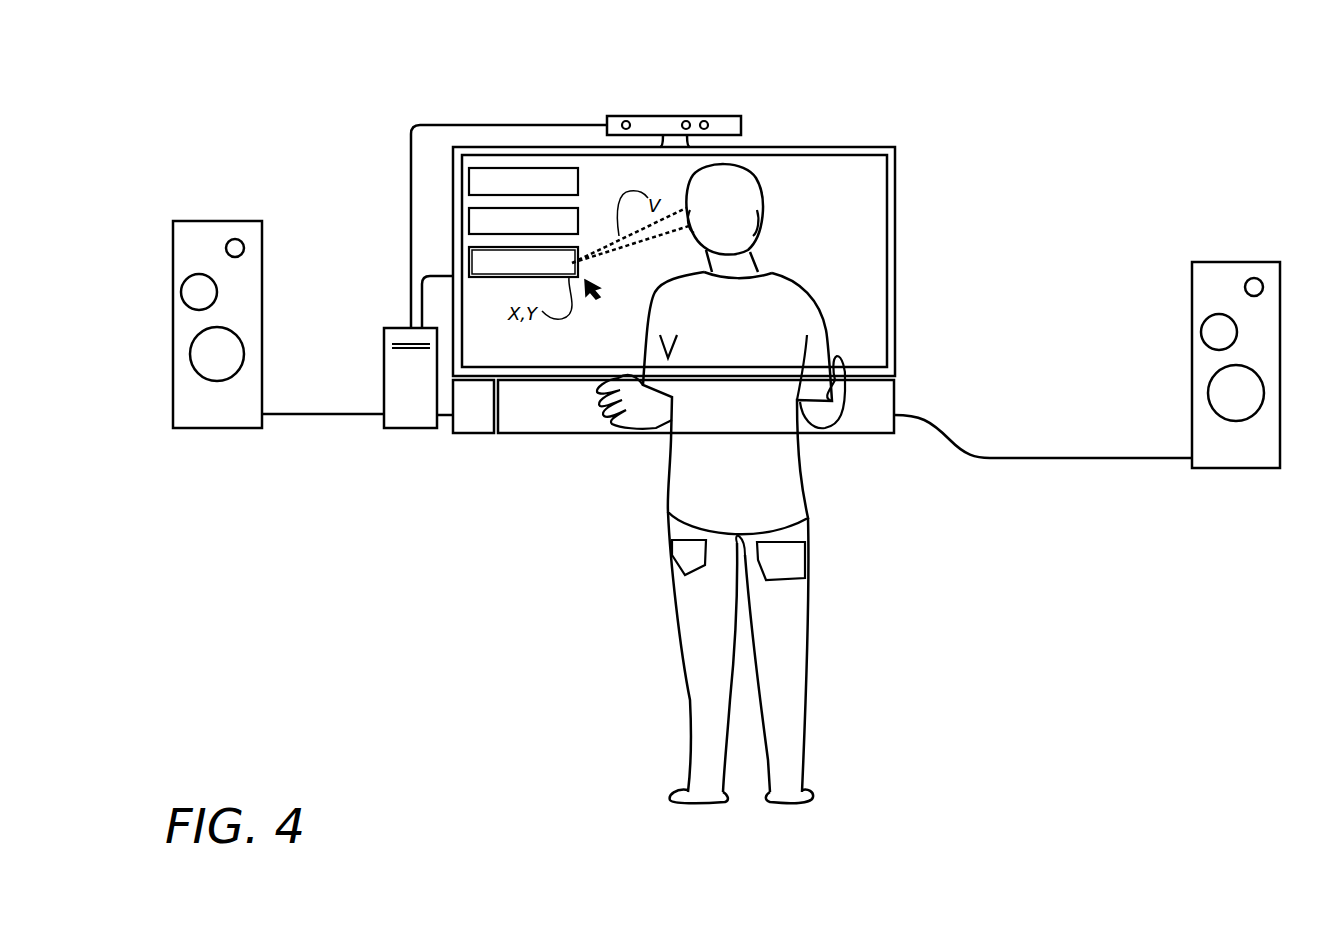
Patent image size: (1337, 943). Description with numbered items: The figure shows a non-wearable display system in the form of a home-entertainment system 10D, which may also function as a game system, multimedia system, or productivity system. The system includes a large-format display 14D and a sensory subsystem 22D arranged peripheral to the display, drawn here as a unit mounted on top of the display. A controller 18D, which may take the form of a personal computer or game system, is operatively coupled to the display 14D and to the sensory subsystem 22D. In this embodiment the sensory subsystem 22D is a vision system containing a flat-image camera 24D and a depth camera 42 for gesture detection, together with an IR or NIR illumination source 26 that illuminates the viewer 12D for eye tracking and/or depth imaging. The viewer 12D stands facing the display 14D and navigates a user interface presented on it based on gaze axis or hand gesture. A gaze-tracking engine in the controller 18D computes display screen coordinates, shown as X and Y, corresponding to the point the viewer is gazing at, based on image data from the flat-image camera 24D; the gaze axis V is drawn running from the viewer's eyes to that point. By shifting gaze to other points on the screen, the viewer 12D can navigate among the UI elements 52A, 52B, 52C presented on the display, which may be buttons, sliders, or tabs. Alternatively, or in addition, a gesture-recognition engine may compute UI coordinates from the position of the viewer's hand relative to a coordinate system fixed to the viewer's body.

The home-entertainment system 10D is at (304, 170).
The viewer 12D is at (721, 483).
The large-format display 14D is at (674, 261).
The controller 18D is at (410, 378).
The sensory subsystem 22D is at (742, 125).
The flat-image camera 24D is at (705, 112).
The IR or NIR illumination source 26 is at (627, 112).
The depth camera 42 is at (686, 112).
The UI element 52A is at (523, 181).
The UI element 52B is at (523, 221).
The UI element 52C is at (523, 262).